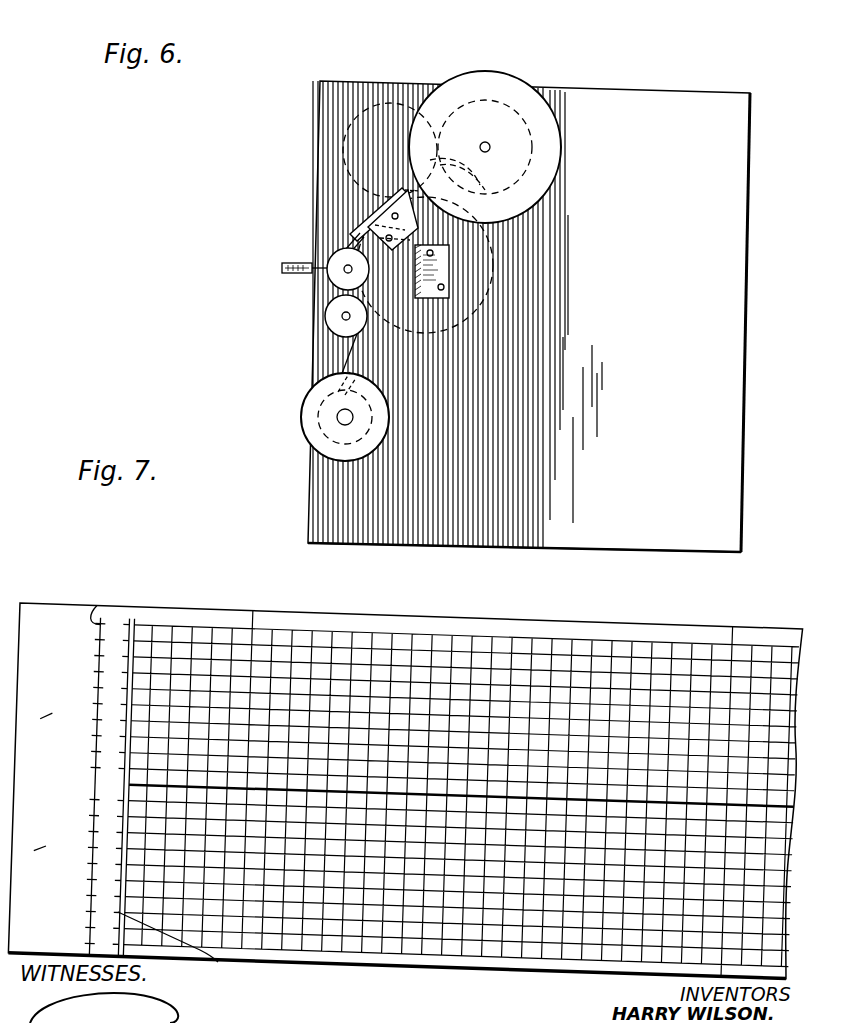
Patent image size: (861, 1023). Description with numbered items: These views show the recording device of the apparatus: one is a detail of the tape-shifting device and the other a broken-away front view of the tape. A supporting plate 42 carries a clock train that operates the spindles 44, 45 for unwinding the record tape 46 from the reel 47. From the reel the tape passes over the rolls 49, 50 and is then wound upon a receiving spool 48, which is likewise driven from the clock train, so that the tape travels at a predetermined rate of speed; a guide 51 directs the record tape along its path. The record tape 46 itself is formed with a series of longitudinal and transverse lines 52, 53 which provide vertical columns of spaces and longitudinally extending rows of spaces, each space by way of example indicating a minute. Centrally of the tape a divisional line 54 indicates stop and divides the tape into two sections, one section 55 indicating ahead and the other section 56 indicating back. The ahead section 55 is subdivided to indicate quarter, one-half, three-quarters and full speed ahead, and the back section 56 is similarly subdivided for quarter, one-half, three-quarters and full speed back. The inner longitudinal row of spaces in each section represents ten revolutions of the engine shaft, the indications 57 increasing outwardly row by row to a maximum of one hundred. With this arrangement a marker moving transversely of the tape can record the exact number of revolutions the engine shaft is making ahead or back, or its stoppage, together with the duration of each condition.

In FIG. 6, the supporting plate 42 is at (529, 316).
In FIG. 6, the spindle 44 is at (342, 316).
In FIG. 6, the spindle 45 is at (327, 256).
In FIG. 6, the record tape 46 is at (333, 235).
In FIG. 7, the record tape 46 is at (430, 612).
In FIG. 6, the reel 47 is at (490, 147).
In FIG. 6, the receiving spool 48 is at (345, 417).
In FIG. 6, the roll 49 is at (340, 275).
In FIG. 6, the roll 50 is at (337, 325).
In FIG. 6, the guide 51 is at (377, 215).
In FIG. 7, the longitudinal lines 52 is at (280, 950).
In FIG. 7, the transverse lines 53 is at (295, 935).
In FIG. 7, the divisional line 54 is at (103, 785).
In FIG. 7, the ahead section 55 is at (55, 846).
In FIG. 7, the back section 56 is at (60, 724).
In FIG. 7, the indications 57 is at (97, 603).